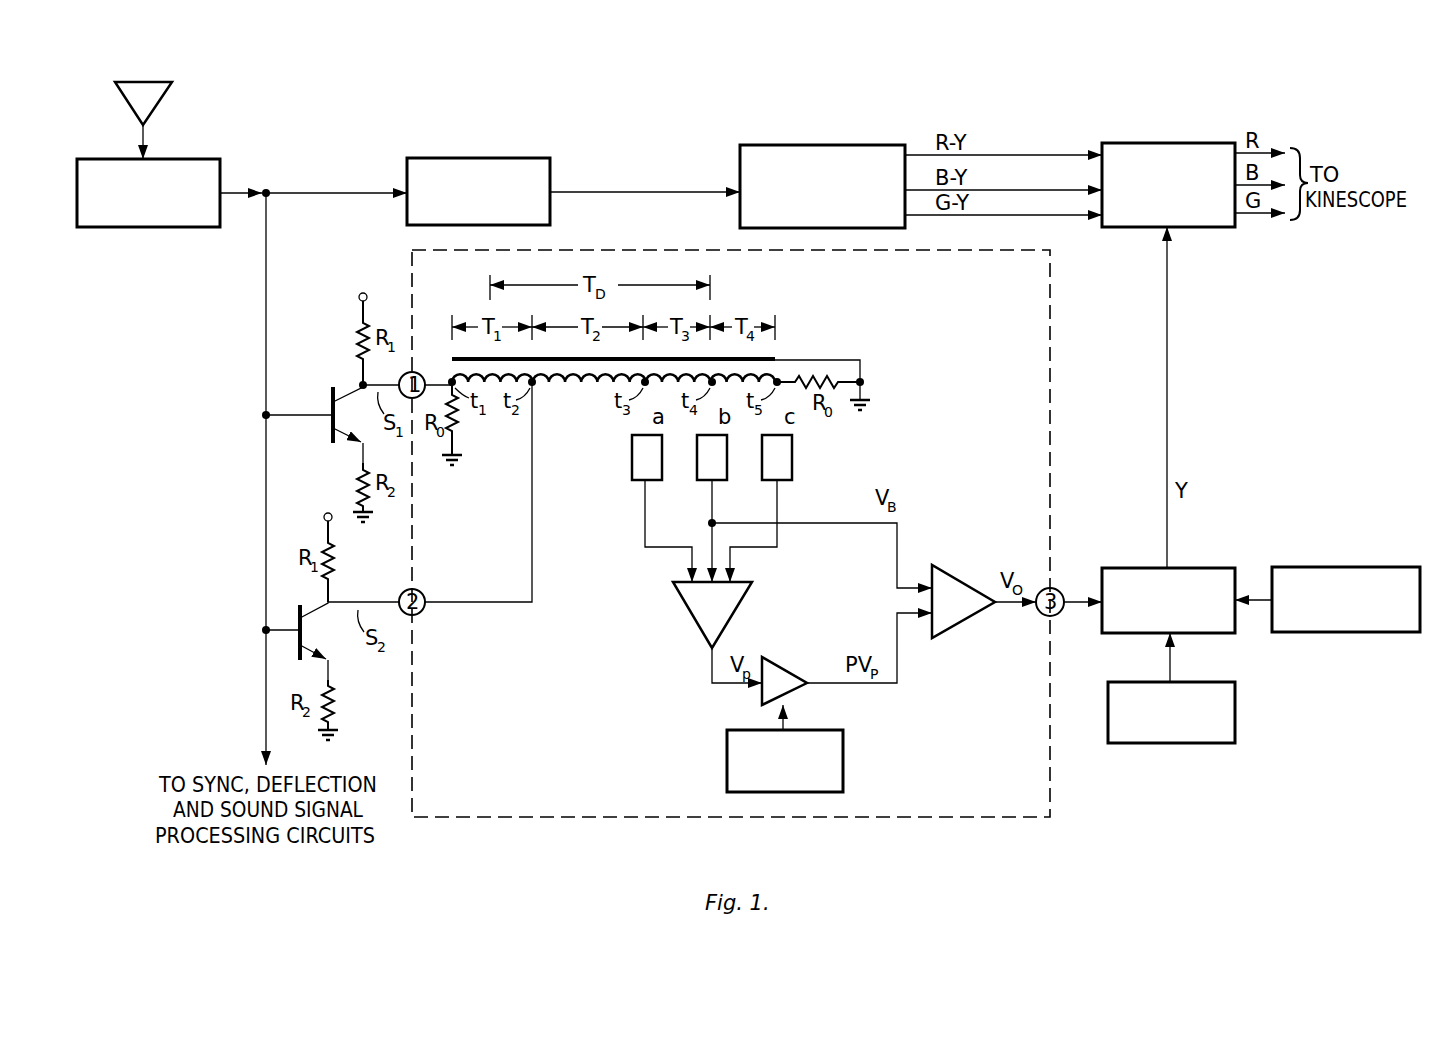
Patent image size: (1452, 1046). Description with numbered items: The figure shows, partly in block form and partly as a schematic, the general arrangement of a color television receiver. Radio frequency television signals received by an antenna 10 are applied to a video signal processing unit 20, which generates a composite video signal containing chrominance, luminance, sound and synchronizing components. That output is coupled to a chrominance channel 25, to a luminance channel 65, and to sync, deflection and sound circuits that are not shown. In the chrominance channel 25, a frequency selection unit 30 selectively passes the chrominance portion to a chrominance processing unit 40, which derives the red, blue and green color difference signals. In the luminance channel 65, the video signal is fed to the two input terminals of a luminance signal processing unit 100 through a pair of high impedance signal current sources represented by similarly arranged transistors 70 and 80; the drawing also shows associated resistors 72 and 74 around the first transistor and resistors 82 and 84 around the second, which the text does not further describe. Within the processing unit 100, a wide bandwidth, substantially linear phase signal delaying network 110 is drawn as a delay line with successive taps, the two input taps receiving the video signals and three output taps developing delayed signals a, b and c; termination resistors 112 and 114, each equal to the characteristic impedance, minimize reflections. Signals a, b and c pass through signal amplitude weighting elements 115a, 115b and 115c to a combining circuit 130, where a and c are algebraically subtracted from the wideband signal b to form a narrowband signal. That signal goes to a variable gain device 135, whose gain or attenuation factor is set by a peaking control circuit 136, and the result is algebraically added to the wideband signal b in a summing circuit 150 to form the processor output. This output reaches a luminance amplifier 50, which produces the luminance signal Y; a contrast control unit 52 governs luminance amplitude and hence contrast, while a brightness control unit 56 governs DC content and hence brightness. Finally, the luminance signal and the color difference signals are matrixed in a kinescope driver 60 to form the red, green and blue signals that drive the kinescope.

The antenna 10 is at (157, 97).
The video signal processing unit 20 is at (150, 228).
The chrominance channel 25 is at (602, 108).
The frequency selection unit 30 is at (550, 173).
The chrominance processing unit 40 is at (740, 176).
The luminance amplifier 50 is at (1195, 568).
The contrast control unit 52 is at (1235, 710).
The brightness control unit 56 is at (1338, 567).
The kinescope driver 60 is at (1198, 228).
The luminance channel 65 is at (637, 851).
The transistor 70 is at (369, 424).
The resistor R1 72 is at (354, 335).
The resistor R2 74 is at (353, 479).
The transistor 80 is at (336, 640).
The resistor R1 82 is at (338, 560).
The resistor R2 84 is at (338, 700).
The luminance signal processing unit 100 is at (674, 728).
The signal delaying network 110 is at (577, 390).
The termination resistor 112 is at (458, 437).
The termination resistor 114 is at (812, 368).
The signal amplitude weighting element 115a is at (652, 482).
The signal amplitude weighting element 115b is at (717, 482).
The signal amplitude weighting element 115c is at (782, 482).
The combining circuit 130 is at (686, 604).
The variable gain device 135 is at (778, 666).
The peaking control circuit 136 is at (843, 766).
The summing circuit 150 is at (958, 624).